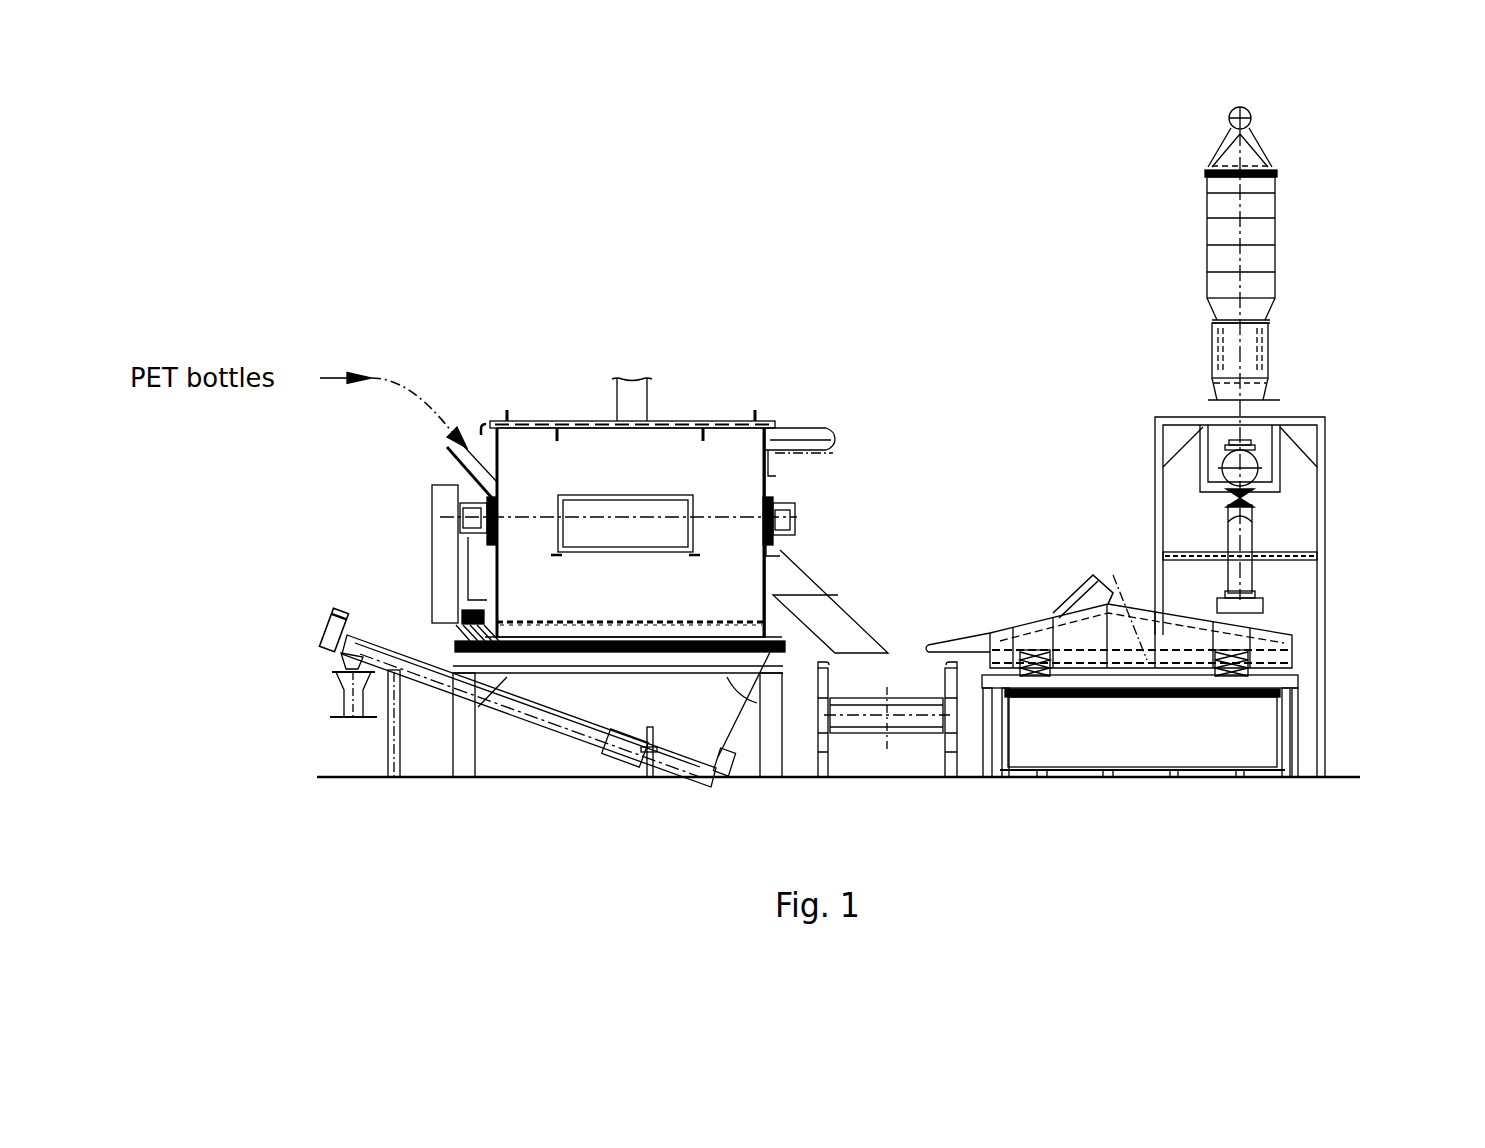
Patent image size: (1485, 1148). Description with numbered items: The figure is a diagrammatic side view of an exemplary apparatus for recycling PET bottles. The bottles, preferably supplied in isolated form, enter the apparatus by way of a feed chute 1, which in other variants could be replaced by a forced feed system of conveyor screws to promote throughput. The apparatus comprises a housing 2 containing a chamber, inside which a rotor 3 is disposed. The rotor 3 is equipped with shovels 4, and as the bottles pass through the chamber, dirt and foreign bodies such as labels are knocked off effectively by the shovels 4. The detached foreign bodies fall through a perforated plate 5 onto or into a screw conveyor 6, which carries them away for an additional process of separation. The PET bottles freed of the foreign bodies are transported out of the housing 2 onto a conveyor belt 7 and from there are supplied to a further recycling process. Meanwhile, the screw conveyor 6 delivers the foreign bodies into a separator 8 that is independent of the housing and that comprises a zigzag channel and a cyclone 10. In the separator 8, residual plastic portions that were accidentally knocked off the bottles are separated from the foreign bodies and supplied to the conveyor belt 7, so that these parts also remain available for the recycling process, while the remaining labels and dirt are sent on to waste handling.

The feed chute 1 is at (487, 447).
The housing 2 is at (626, 479).
The rotor 3 is at (473, 499).
The shovels 4 is at (726, 490).
The perforated plate 5 is at (728, 622).
The screw conveyor 6 is at (642, 778).
The conveyor belt 7 is at (924, 735).
The separator 8 is at (1360, 553).
The cyclone 10 is at (1277, 228).